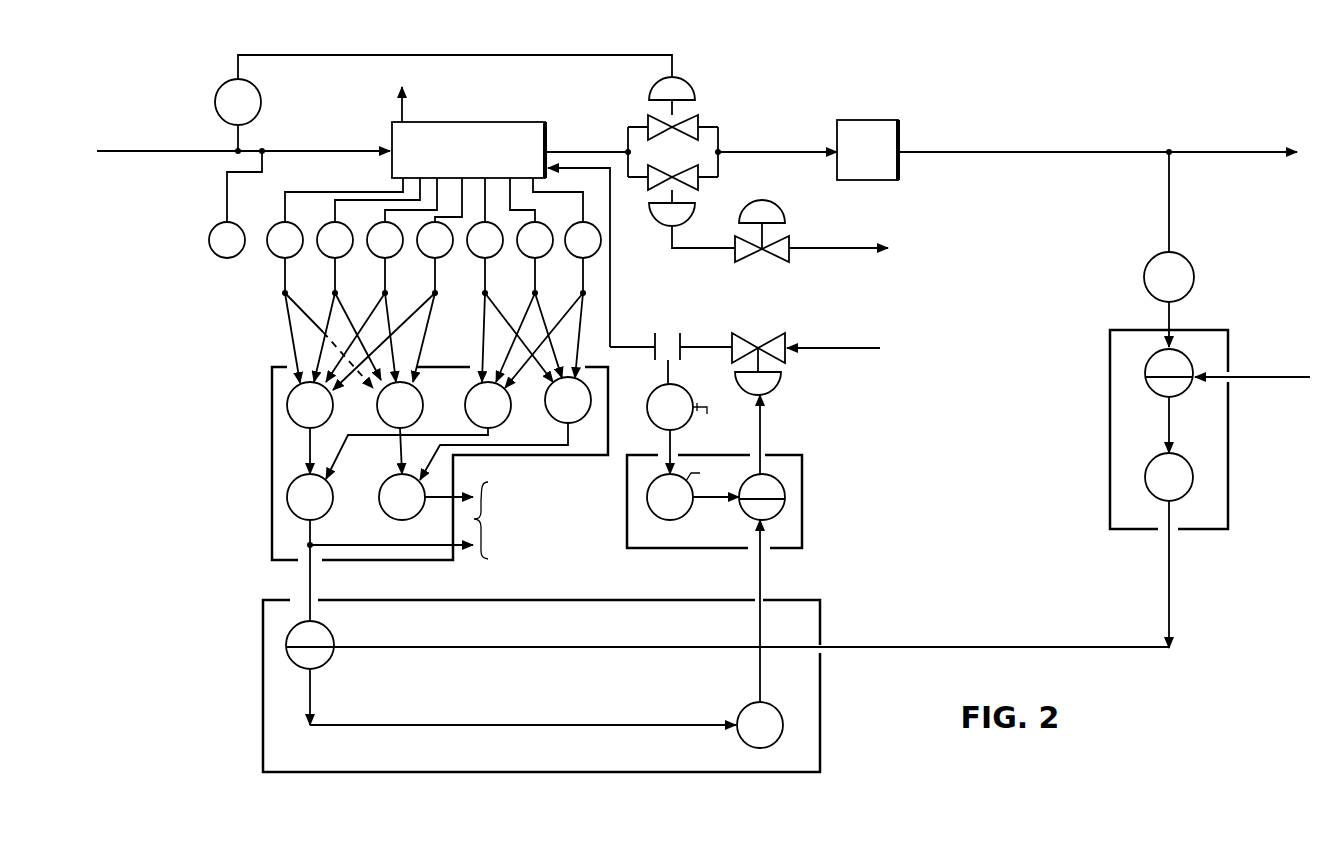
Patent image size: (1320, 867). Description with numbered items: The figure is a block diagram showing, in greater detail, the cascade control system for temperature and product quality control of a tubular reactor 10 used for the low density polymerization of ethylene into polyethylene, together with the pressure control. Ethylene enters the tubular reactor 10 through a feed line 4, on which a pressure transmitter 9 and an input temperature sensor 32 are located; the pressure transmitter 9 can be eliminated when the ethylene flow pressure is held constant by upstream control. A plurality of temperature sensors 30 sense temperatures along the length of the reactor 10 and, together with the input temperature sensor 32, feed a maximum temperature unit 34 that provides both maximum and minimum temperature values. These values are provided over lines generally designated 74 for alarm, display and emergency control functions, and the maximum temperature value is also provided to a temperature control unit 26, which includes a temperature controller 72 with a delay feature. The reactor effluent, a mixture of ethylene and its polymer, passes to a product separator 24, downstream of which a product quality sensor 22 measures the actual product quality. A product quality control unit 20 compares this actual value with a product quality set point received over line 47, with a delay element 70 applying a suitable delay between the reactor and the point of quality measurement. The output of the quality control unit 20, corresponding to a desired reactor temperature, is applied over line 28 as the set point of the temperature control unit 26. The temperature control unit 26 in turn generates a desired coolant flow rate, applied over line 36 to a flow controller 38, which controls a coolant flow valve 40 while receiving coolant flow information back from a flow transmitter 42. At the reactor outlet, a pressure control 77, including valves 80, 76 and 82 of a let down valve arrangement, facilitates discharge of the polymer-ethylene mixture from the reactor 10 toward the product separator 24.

The feed line 4 is at (186, 153).
The pressure transmitter 9 is at (226, 86).
The tubular reactor 10 is at (532, 130).
The product quality control unit 20 is at (1183, 429).
The product quality sensor 22 is at (1148, 266).
The product separator 24 is at (900, 143).
The temperature control unit 26 is at (517, 686).
The line 28 is at (1022, 648).
The temperature sensors 30 is at (418, 260).
The input temperature sensor 32 is at (226, 260).
The maximum temperature unit 34 is at (272, 460).
The line 36 is at (762, 580).
The flow controller 38 is at (802, 488).
The coolant flow valve 40 is at (783, 335).
The flow transmitter 42 is at (671, 387).
The line 47 is at (1252, 382).
The delay element 70 is at (1155, 492).
The temperature controller 72 is at (318, 660).
The lines 74 is at (478, 560).
The pressure relief valve 76 is at (698, 167).
The pressure control unit 77 is at (722, 75).
The pressure control valve 80 is at (698, 118).
The vent valve 82 is at (789, 244).